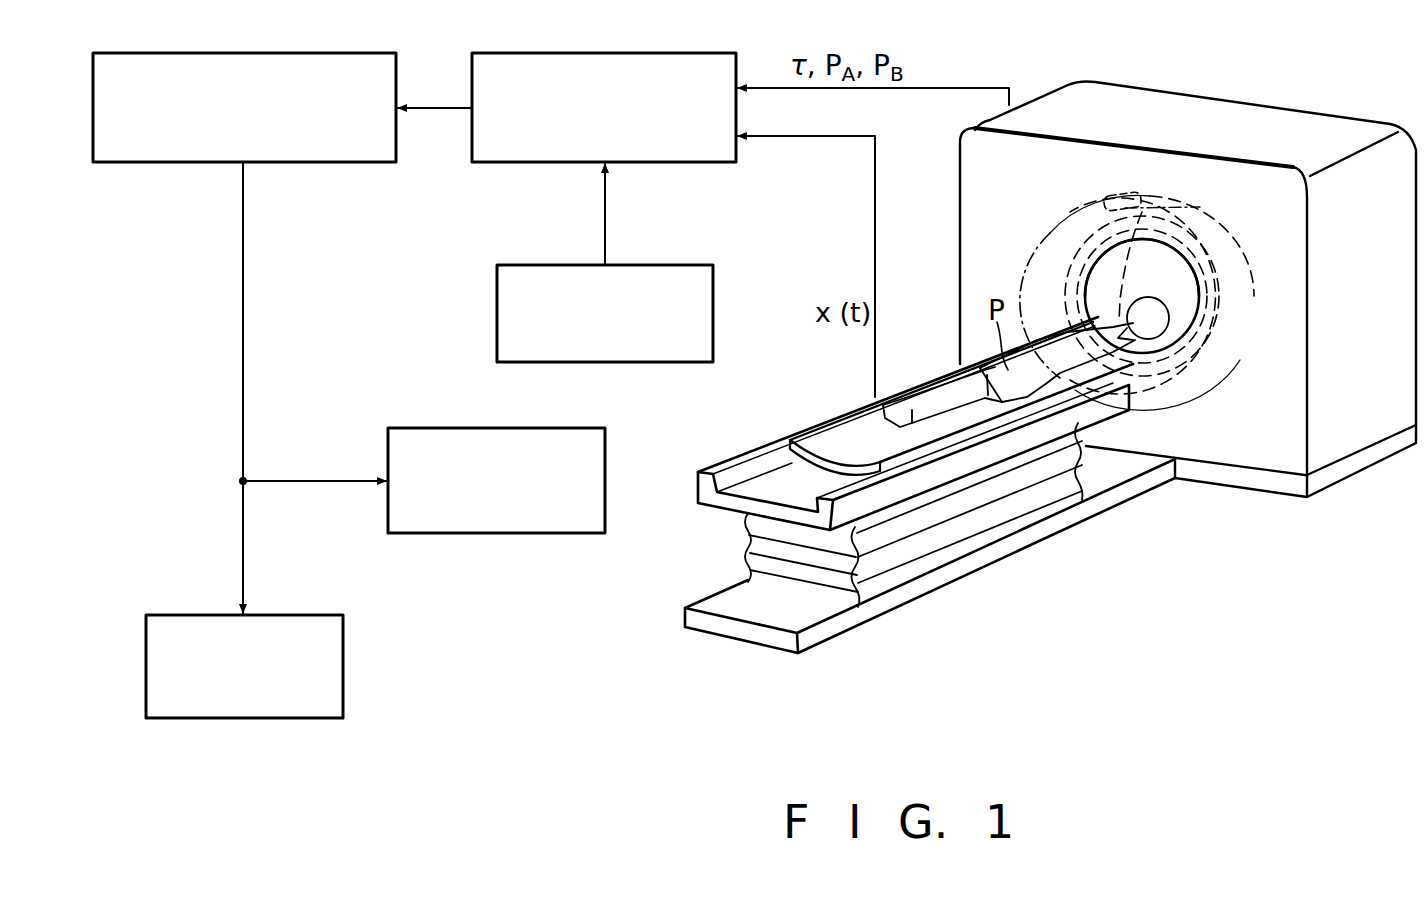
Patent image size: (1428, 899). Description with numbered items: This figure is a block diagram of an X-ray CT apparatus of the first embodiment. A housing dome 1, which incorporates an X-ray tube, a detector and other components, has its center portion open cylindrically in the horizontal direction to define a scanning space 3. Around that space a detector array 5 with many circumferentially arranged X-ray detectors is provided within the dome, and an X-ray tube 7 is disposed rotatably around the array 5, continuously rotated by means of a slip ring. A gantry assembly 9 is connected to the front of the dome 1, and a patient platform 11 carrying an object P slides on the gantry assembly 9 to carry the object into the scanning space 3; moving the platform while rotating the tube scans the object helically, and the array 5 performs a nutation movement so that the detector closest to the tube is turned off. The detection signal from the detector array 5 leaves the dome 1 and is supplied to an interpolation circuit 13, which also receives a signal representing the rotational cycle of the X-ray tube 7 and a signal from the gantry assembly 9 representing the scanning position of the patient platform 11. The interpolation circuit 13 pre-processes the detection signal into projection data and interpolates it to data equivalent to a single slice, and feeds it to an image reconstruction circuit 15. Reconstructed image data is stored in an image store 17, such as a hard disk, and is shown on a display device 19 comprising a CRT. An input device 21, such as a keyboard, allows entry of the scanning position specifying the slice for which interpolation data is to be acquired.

The housing dome 1 is at (1256, 102).
The scanning space 3 is at (1190, 318).
The detector array 5 is at (1238, 307).
The X-ray tube 7 is at (1142, 210).
The gantry assembly 9 is at (1043, 512).
The patient platform 11 is at (813, 443).
The interpolation circuit 13 is at (640, 53).
The image reconstruction circuit 15 is at (326, 53).
The image store 17 is at (417, 428).
The display device 19 is at (343, 668).
The input device 21 is at (660, 265).